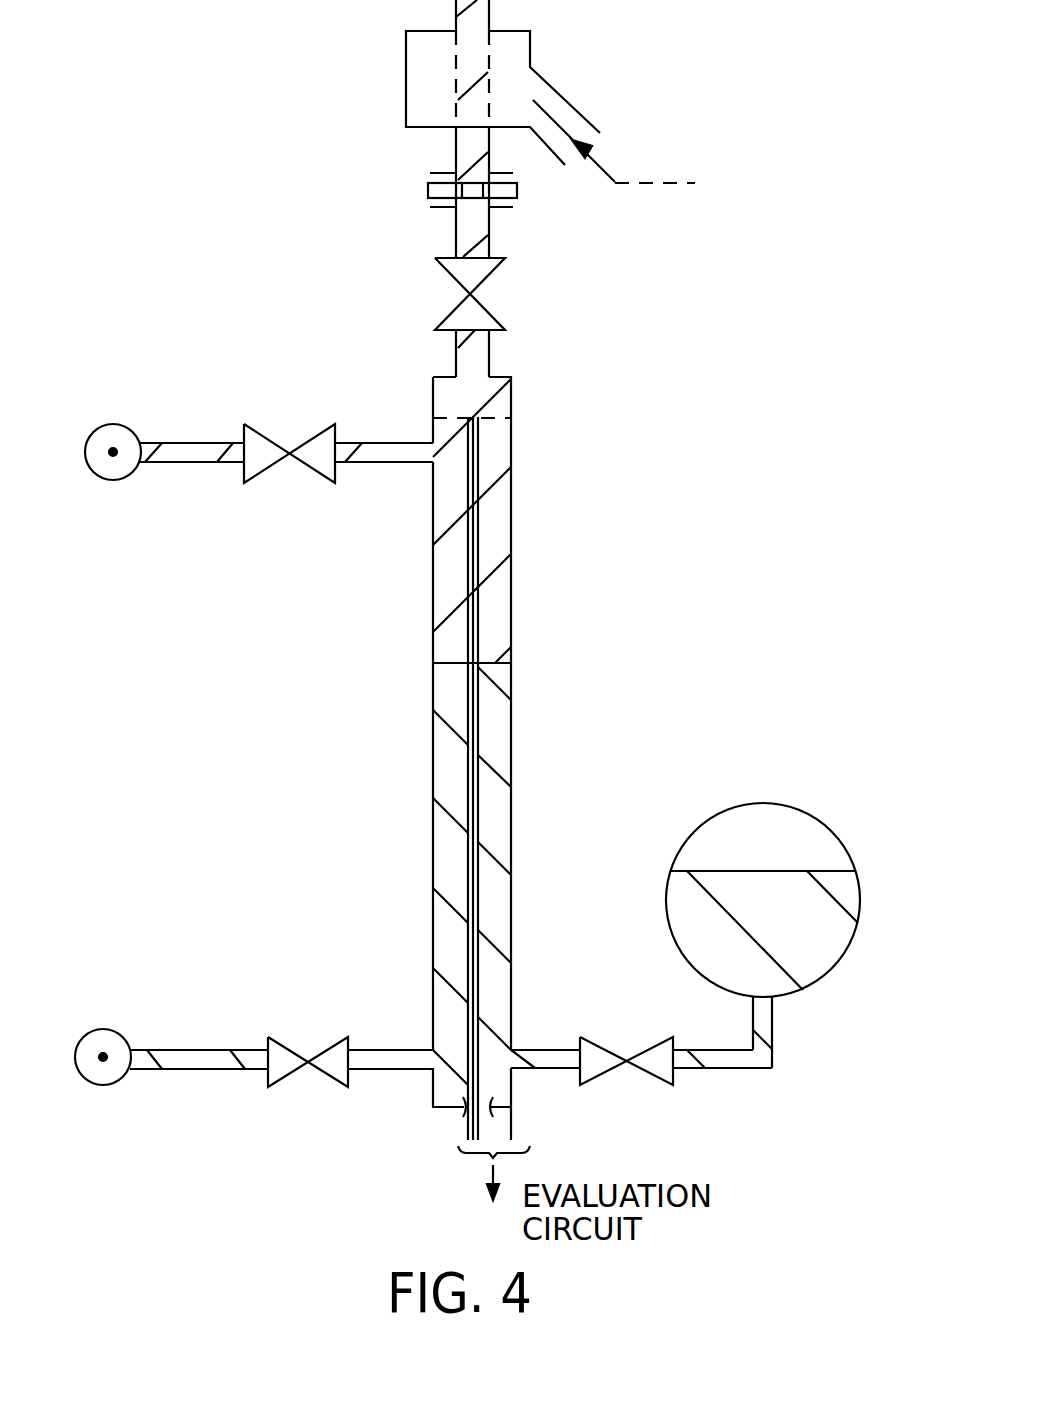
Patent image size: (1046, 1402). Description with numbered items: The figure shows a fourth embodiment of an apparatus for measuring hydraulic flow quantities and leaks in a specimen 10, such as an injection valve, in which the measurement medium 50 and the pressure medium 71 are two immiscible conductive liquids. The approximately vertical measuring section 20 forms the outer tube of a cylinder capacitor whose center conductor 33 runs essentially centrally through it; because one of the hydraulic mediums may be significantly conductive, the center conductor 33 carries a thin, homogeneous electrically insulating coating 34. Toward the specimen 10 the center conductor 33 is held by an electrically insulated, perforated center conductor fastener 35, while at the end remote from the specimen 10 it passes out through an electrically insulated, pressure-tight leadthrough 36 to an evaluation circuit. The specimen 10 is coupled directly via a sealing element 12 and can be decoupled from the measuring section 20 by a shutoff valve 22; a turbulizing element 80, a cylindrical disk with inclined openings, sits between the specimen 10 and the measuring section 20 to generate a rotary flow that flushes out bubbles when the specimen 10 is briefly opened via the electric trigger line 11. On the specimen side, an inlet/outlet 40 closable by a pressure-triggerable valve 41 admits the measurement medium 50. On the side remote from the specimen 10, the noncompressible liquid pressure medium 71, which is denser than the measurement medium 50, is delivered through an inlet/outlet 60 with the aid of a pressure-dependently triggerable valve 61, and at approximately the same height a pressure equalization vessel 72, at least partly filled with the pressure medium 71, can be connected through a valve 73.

The specimen 10 is at (440, 70).
The electric trigger line 11 is at (695, 183).
The sealing element 12 is at (530, 190).
The turbulizing element 80 is at (430, 172).
The shutoff valve 22 is at (480, 272).
The measurement medium 50 is at (500, 592).
The center conductor fastener 35 is at (485, 425).
The measuring section 20 is at (458, 640).
The electrically insulating coating 34 is at (468, 782).
The center conductor 33 is at (470, 855).
The liquid pressure medium 71 is at (490, 757).
The pressure-tight leadthrough 36 is at (443, 1112).
The inlet/outlet for measurement medium 40 is at (385, 452).
The valve 41 is at (265, 462).
The inlet/outlet for pressure medium 60 is at (200, 1050).
The valve 61 is at (330, 1057).
The valve 73 is at (605, 1050).
The pressure equalization vessel 72 is at (797, 830).